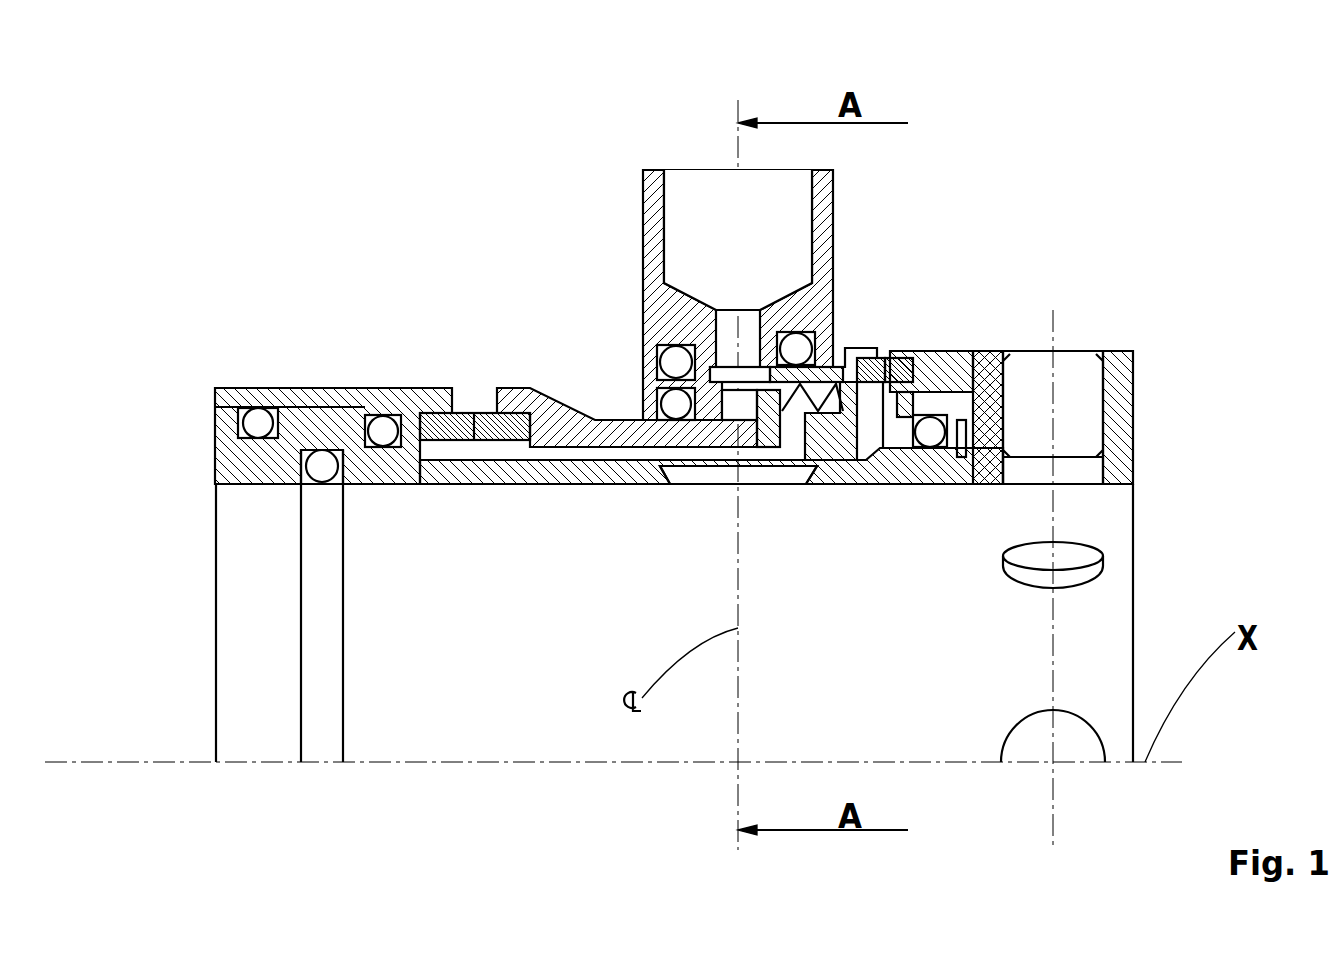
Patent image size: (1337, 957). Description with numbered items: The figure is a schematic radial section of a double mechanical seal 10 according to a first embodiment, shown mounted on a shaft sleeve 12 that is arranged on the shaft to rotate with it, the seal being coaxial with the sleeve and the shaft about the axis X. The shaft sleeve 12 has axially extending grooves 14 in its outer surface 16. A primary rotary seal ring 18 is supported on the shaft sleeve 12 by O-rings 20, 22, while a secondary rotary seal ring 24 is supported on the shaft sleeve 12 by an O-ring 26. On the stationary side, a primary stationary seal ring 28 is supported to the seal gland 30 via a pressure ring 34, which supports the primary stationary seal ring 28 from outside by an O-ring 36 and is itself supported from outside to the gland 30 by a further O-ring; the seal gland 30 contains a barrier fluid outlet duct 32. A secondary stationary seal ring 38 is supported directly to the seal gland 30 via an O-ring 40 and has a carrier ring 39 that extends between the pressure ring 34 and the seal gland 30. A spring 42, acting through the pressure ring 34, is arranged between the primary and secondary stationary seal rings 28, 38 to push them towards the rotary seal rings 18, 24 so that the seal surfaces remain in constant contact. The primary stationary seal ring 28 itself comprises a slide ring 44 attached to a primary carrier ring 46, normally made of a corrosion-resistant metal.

The double mechanical seal 10 is at (443, 266).
The shaft sleeve 12 is at (272, 456).
The axially extending grooves 14 is at (720, 471).
The outer surface 16 is at (472, 452).
The primary rotary seal ring 18 is at (345, 396).
The O-ring 20 is at (237, 397).
The O-ring 22 is at (383, 428).
The secondary rotary seal ring 24 is at (932, 430).
The O-ring 26 is at (1005, 375).
The primary stationary seal ring 28 is at (530, 349).
The seal gland 30 is at (820, 227).
The barrier fluid outlet duct 32 is at (722, 257).
The pressure ring 34 is at (660, 366).
The O-ring 36 is at (665, 402).
The secondary stationary seal ring 38 is at (838, 430).
The carrier ring 39 is at (838, 370).
The O-ring 40 is at (797, 352).
The spring 42 is at (757, 425).
The slide ring 44 is at (510, 440).
The primary carrier ring 46 is at (578, 423).